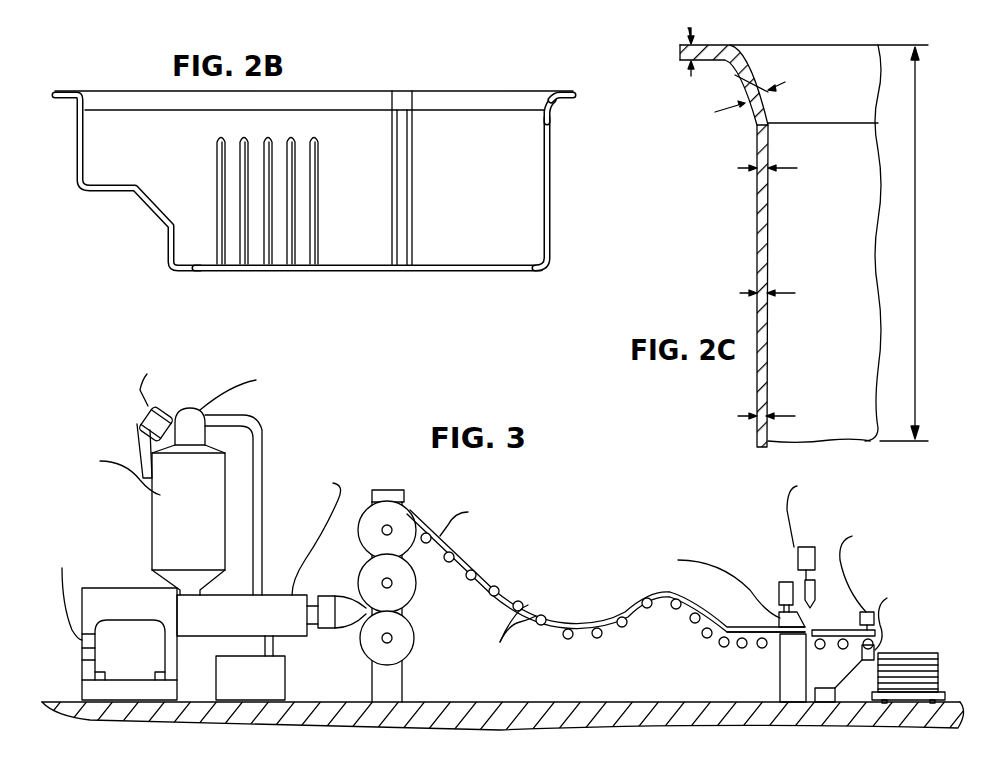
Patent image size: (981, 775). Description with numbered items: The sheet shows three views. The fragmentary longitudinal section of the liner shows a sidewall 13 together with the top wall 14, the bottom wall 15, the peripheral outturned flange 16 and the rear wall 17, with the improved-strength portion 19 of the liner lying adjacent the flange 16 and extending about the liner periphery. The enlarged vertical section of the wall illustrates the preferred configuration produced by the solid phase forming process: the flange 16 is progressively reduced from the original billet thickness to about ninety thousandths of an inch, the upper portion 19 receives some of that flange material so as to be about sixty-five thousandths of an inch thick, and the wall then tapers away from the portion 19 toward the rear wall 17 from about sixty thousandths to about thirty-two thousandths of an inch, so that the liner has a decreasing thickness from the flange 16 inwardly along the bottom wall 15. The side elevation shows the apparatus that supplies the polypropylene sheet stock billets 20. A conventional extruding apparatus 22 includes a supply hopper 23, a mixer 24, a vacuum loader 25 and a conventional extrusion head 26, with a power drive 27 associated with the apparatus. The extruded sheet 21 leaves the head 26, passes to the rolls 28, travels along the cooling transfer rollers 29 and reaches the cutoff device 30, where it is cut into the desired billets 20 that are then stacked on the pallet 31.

In FIG. 2B, the sidewall 13 is at (158, 154).
In FIG. 2C, the sidewall 13 is at (850, 130).
In FIG. 2B, the top wall 14 is at (553, 165).
In FIG. 2B, the bottom wall 15 is at (75, 167).
In FIG. 2C, the bottom wall 15 is at (757, 220).
In FIG. 2B, the peripheral outturned flange 16 is at (563, 92).
In FIG. 2C, the peripheral outturned flange 16 is at (718, 45).
In FIG. 2B, the rear wall 17 is at (442, 273).
In FIG. 2B, the upper portion of the liner adjacent the flange 19 is at (546, 108).
In FIG. 2C, the upper portion of the liner adjacent the flange 19 is at (740, 80).
In FIG. 3, the billets 20 is at (940, 657).
In FIG. 3, the extruded sheet 21 is at (512, 582).
In FIG. 3, the extruding apparatus 22 is at (350, 418).
In FIG. 3, the supply hopper 23 is at (218, 522).
In FIG. 3, the mixer 24 is at (140, 410).
In FIG. 3, the vacuum loader 25 is at (195, 410).
In FIG. 3, the extrusion head 26 is at (290, 624).
In FIG. 3, the power drive 27 is at (82, 660).
In FIG. 3, the rolls 28 is at (392, 512).
In FIG. 3, the cooling transfer rollers 29 is at (625, 598).
In FIG. 3, the cutoff device 30 is at (785, 560).
In FIG. 3, the pallet 31 is at (905, 694).